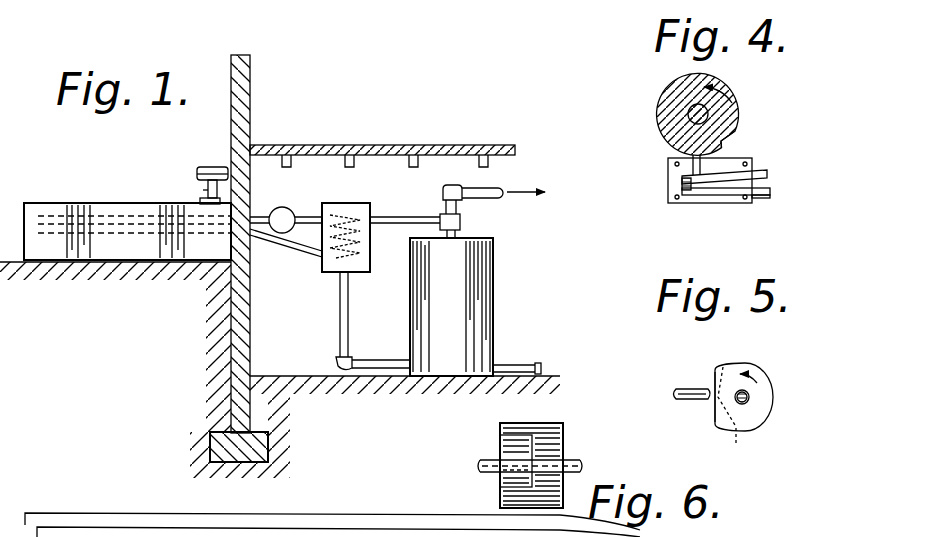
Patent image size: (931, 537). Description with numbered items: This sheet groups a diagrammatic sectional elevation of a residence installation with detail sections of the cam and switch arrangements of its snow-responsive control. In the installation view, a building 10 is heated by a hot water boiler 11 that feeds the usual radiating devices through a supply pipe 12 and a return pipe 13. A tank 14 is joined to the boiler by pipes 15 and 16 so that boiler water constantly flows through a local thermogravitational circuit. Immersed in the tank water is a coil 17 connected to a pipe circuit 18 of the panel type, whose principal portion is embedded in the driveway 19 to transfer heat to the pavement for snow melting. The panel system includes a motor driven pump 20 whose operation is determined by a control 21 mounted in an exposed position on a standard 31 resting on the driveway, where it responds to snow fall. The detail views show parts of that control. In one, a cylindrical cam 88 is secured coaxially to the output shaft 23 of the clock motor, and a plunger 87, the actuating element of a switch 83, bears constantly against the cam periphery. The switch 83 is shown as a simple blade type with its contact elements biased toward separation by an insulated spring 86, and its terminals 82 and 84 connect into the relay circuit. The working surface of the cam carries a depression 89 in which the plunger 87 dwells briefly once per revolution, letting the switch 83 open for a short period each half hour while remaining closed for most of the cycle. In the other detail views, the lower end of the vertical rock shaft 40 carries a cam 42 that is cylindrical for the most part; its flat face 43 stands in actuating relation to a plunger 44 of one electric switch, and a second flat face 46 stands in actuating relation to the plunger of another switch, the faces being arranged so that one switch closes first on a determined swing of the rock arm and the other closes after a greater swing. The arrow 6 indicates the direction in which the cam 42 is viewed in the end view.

In FIG. 5, the arrow 6 is at (683, 338).
In FIG. 1, the building 10 is at (243, 102).
In FIG. 1, the hot water boiler 11 is at (490, 297).
In FIG. 1, the supply pipe 12 is at (490, 186).
In FIG. 1, the return pipe 13 is at (513, 366).
In FIG. 1, the tank 14 is at (340, 203).
In FIG. 1, the pipe 15 is at (400, 217).
In FIG. 1, the pipe 16 is at (372, 360).
In FIG. 1, the coil 17 is at (330, 270).
In FIG. 1, the pipe circuit 18 is at (105, 213).
In FIG. 1, the driveway 19 is at (125, 203).
In FIG. 1, the motor driven pump 20 is at (282, 207).
In FIG. 1, the control 21 is at (205, 167).
In FIG. 1, the standard 31 is at (203, 188).
In FIG. 4, the output shaft 23 is at (688, 114).
In FIG. 4, the terminal 82 is at (766, 196).
In FIG. 4, the switch 83 is at (672, 205).
In FIG. 4, the terminal 84 is at (760, 172).
In FIG. 4, the spring 86 is at (712, 183).
In FIG. 4, the plunger 87 is at (693, 168).
In FIG. 4, the cylindrical cam 88 is at (731, 108).
In FIG. 4, the depression 89 is at (720, 141).
In FIG. 5, the rock shaft 40 is at (748, 401).
In FIG. 6, the rock shaft 40 is at (482, 461).
In FIG. 5, the cam 42 is at (745, 368).
In FIG. 6, the cam 42 is at (500, 427).
In FIG. 5, the face 43 is at (715, 375).
In FIG. 6, the face 43 is at (550, 451).
In FIG. 5, the plunger 44 is at (695, 402).
In FIG. 5, the face 46 is at (736, 446).
In FIG. 6, the face 46 is at (512, 478).